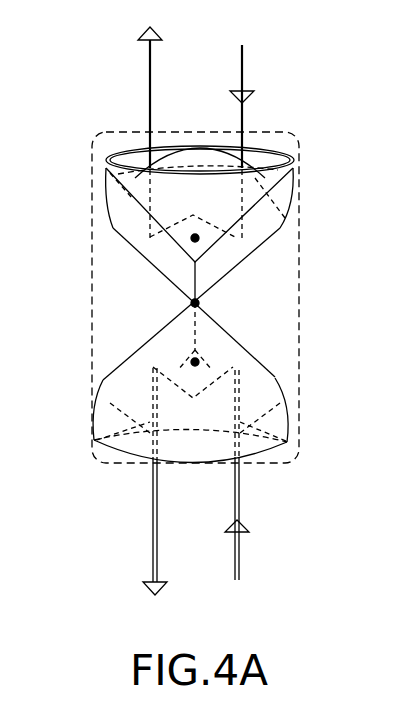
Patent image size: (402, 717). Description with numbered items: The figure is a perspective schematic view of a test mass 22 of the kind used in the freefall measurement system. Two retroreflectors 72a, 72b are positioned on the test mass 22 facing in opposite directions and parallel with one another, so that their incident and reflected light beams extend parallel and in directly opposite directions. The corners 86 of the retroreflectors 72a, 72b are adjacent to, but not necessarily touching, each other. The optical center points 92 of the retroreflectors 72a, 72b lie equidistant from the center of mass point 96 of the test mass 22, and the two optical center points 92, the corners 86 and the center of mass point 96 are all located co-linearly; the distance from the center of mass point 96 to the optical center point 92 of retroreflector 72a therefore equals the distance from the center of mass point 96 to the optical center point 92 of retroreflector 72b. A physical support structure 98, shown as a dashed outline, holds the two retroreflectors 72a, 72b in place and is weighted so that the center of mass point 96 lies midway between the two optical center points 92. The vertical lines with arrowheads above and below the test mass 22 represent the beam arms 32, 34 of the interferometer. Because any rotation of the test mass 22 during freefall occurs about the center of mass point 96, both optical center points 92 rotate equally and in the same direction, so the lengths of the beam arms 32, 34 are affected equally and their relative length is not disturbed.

The test mass 22 is at (79, 267).
The beam arm 32 is at (152, 562).
The beam arm 34 is at (149, 62).
The retroreflector 72a is at (116, 229).
The retroreflector 72b is at (101, 379).
The corners 86 is at (190, 302).
The optical center points 92 is at (200, 240).
The center of mass point 96 is at (200, 303).
The physical support structure 98 is at (91, 306).